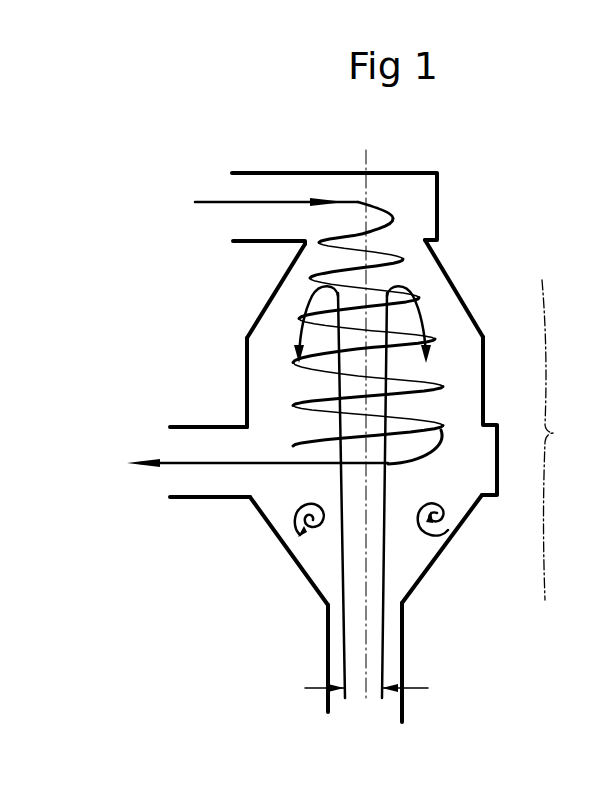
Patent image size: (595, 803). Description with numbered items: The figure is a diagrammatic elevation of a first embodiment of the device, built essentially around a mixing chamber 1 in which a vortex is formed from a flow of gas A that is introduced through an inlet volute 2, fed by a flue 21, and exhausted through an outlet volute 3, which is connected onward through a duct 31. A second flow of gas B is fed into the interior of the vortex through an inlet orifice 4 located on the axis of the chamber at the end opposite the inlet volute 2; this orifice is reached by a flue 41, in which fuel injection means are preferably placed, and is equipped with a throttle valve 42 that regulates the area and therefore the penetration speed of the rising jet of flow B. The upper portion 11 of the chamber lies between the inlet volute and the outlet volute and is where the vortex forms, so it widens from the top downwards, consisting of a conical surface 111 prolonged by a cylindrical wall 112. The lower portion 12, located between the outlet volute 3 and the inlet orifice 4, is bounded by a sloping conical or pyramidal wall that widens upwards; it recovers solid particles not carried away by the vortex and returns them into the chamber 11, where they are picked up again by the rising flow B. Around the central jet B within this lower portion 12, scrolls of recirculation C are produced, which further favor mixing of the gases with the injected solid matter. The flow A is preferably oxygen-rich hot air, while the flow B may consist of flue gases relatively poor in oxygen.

The mixing chamber 1 is at (559, 440).
The inlet volute 2 is at (441, 203).
The flue 21 is at (240, 243).
The outlet volute 3 is at (496, 424).
The duct 31 is at (175, 422).
The inlet orifice 4 is at (405, 606).
The flue 41 is at (327, 639).
The throttle valve 42 is at (322, 688).
The upper portion of the chamber 11 is at (331, 333).
The conical surface 111 is at (272, 292).
The cylindrical wall 112 is at (245, 386).
The lower portion of the mixing chamber 12 is at (265, 518).
The flow of gas A is at (258, 199).
The second flow of gas B is at (383, 660).
The scrolls of recirculation C is at (446, 531).